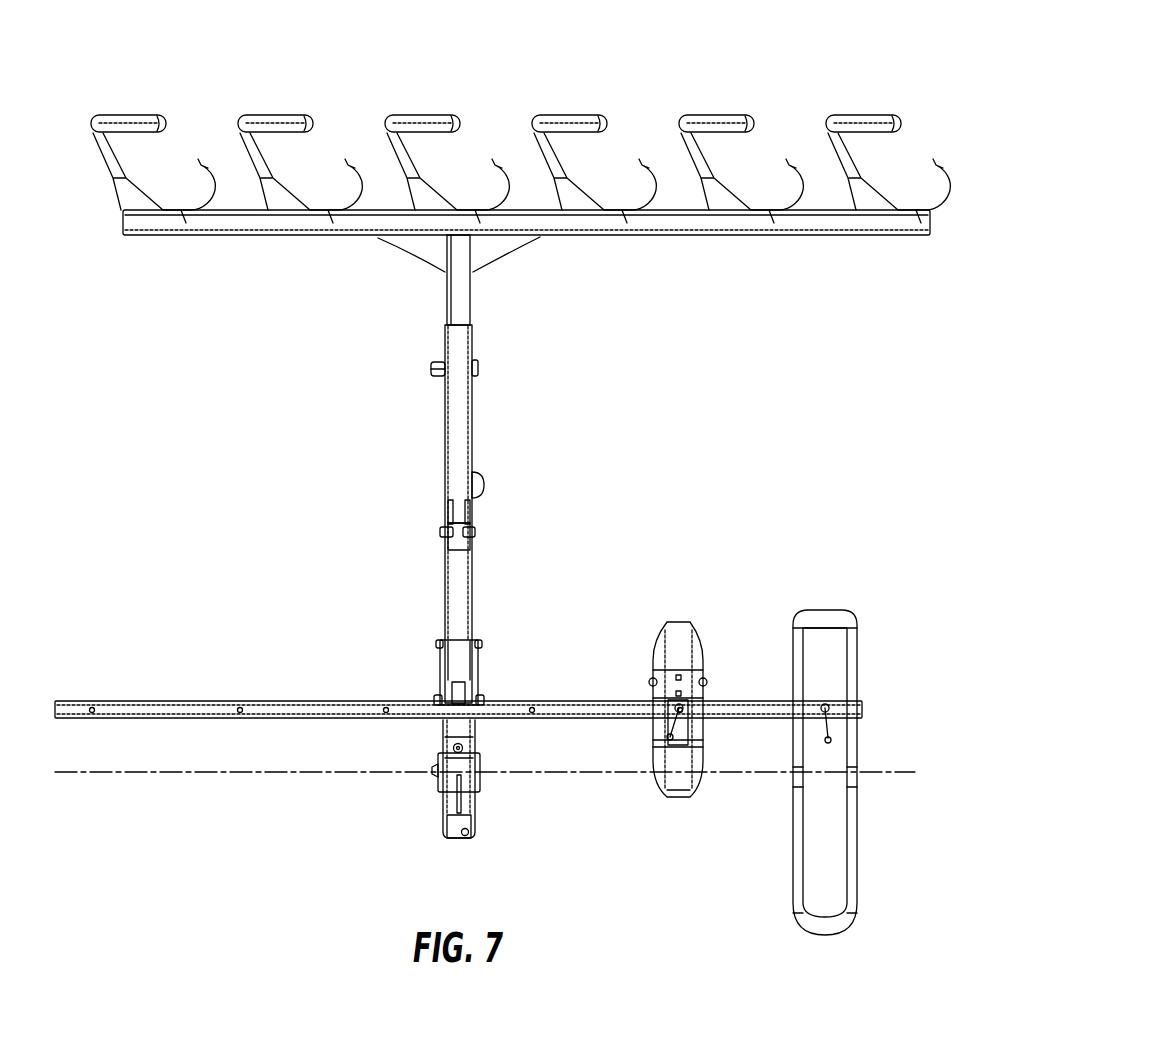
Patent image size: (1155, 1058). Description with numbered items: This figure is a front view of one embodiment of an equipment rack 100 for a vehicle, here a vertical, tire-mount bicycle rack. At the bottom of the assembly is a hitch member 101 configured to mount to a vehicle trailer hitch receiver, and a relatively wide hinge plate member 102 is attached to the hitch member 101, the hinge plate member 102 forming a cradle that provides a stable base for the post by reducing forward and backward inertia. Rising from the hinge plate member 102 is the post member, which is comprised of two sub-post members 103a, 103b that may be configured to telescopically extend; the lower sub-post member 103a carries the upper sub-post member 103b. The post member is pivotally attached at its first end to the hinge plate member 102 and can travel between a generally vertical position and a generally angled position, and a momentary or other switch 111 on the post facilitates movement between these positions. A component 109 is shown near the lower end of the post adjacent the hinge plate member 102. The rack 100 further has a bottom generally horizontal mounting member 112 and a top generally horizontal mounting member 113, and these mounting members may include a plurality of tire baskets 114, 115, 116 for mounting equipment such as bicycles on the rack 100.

The equipment rack 100 is at (1064, 88).
The hitch member 101 is at (473, 835).
The hinge plate member 102 is at (442, 806).
The sub-post member 103a is at (460, 420).
The sub-post member 103b is at (462, 297).
The clamp 109 is at (482, 777).
The switch 111 is at (485, 488).
The bottom generally horizontal mounting member 112 is at (117, 701).
The top generally horizontal mounting member 113 is at (945, 95).
The tire basket 114 is at (680, 645).
The tire basket 115 is at (823, 620).
The tire basket 116 is at (898, 125).